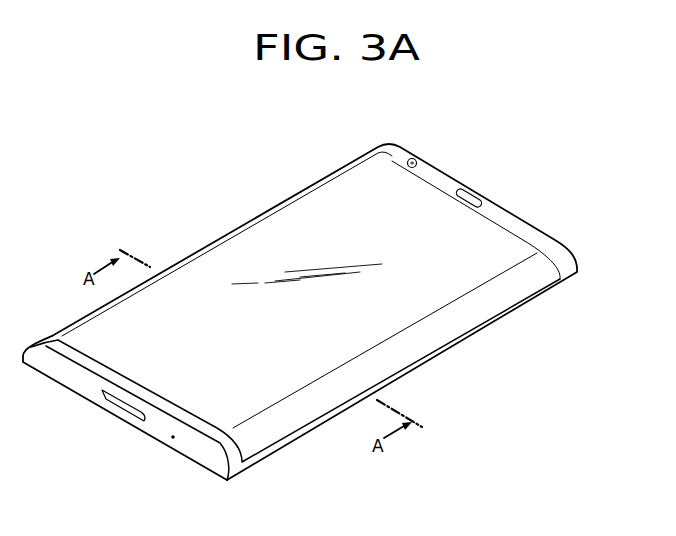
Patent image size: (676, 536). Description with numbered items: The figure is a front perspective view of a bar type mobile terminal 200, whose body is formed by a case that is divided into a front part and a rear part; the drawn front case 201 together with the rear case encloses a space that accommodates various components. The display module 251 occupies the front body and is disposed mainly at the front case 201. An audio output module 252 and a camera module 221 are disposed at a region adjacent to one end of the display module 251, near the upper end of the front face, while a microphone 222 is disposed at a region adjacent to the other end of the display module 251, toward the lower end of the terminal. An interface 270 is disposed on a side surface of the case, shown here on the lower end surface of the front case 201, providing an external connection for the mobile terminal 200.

The mobile terminal 200 is at (186, 243).
The front case 201 is at (528, 232).
The camera module 221 is at (413, 158).
The microphone 222 is at (171, 440).
The display module 251 is at (293, 227).
The audio output module 252 is at (472, 197).
The interface 270 is at (127, 405).